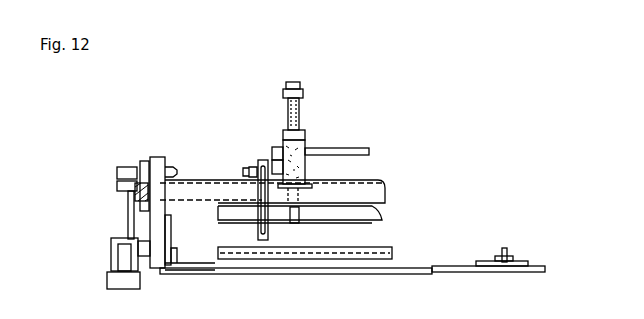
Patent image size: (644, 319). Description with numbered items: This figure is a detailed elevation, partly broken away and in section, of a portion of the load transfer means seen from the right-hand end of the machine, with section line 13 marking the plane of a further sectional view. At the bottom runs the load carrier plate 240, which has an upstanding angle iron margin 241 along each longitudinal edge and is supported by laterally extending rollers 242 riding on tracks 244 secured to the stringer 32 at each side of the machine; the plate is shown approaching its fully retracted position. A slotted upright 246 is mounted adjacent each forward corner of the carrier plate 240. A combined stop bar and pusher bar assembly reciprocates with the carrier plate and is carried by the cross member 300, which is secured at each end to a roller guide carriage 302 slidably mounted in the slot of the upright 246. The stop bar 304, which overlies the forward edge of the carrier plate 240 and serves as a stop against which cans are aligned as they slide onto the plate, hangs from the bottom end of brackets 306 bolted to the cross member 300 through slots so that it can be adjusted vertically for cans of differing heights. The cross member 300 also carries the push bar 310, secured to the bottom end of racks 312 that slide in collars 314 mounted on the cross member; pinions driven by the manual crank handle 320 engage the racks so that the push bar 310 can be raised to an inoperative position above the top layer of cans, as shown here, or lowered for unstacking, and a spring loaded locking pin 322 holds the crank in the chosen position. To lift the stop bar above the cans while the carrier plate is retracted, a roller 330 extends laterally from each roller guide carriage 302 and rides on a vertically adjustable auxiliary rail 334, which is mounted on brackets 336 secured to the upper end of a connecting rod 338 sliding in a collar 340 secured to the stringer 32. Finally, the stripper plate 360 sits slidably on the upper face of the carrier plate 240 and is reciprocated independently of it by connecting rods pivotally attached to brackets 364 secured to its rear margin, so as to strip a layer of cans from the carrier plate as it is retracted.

The section line 13 is at (206, 48).
The stringer 32 is at (110, 261).
The load carrier plate 240 is at (308, 274).
The angle iron margin 241 is at (172, 263).
The roller 242 is at (120, 235).
The track 244 is at (145, 258).
The slotted upright 246 is at (169, 239).
The cross member 300 is at (379, 189).
The roller guide carriage 302 is at (163, 158).
The stop bar 304 is at (392, 251).
The bracket 306 is at (268, 238).
The push bar 310 is at (366, 219).
The rack 312 is at (300, 112).
The collar 314 is at (306, 137).
The manual crank handle 320 is at (274, 165).
The spring loaded locking pin 322 is at (274, 149).
The roller 330 is at (145, 162).
The auxiliary rail 334 is at (134, 196).
The bracket 336 is at (131, 167).
The connecting rod 338 is at (124, 167).
The collar 340 is at (117, 186).
The stripper plate 360 is at (446, 259).
The bracket 364 is at (508, 256).